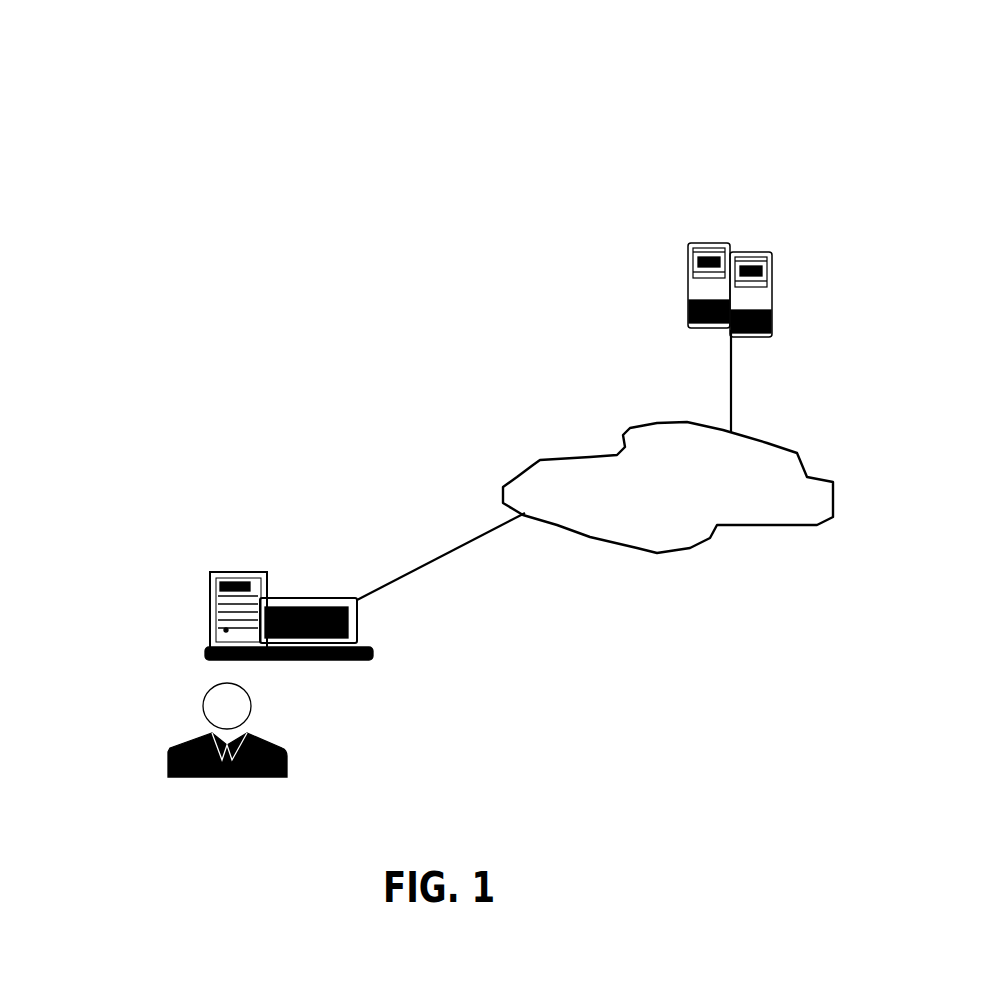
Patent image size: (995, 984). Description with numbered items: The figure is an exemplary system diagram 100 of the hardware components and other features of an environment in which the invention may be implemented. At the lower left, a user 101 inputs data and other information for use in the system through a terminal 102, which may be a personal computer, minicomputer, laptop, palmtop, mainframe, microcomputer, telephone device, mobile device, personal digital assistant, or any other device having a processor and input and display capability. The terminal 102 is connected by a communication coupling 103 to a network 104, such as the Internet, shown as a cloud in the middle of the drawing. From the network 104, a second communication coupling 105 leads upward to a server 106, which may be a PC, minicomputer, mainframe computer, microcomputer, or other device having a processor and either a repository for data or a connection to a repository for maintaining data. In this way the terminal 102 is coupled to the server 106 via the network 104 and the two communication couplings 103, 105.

The system diagram 100 is at (977, 53).
The user 101 is at (205, 735).
The terminal 102 is at (208, 573).
The communication coupling 103 is at (440, 553).
The network 104 is at (622, 446).
The communication coupling 105 is at (727, 375).
The server 106 is at (762, 253).